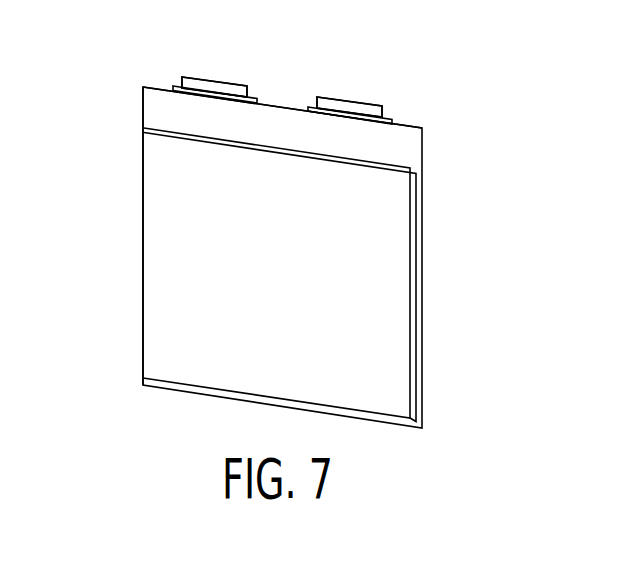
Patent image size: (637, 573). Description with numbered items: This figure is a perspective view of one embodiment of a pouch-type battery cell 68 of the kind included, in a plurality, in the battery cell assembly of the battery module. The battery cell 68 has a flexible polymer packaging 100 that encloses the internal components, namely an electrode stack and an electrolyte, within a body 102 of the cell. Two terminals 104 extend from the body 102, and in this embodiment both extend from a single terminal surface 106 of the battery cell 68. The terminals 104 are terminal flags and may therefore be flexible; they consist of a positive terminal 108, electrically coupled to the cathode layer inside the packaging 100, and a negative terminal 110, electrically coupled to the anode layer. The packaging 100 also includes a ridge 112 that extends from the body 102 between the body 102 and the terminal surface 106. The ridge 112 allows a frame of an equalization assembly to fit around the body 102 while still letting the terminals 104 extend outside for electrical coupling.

The battery cell 68 is at (128, 318).
The polymer packaging 100 is at (447, 240).
The body 102 is at (416, 312).
The terminals 104 is at (235, 88).
The terminal surface 106 is at (280, 98).
The positive terminal 108 is at (193, 80).
The negative terminal 110 is at (387, 109).
The ridge 112 is at (142, 108).